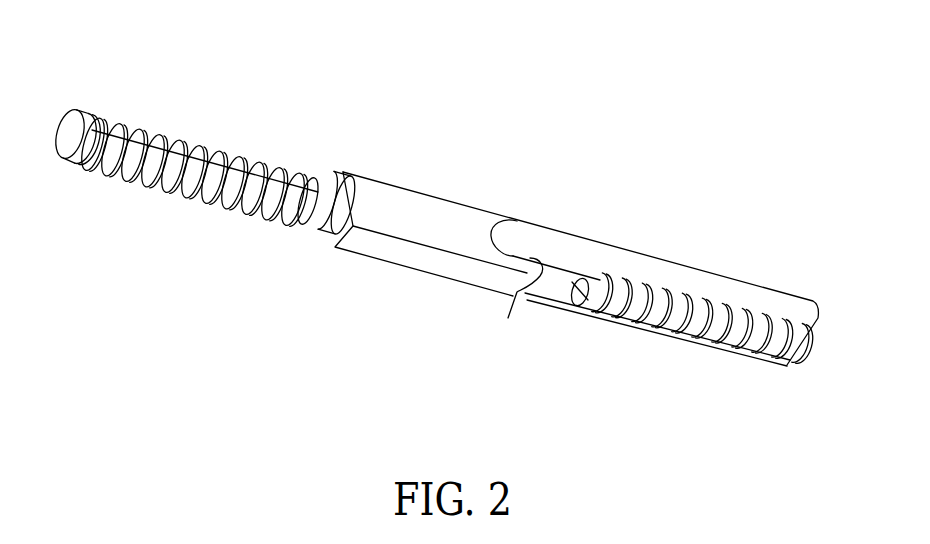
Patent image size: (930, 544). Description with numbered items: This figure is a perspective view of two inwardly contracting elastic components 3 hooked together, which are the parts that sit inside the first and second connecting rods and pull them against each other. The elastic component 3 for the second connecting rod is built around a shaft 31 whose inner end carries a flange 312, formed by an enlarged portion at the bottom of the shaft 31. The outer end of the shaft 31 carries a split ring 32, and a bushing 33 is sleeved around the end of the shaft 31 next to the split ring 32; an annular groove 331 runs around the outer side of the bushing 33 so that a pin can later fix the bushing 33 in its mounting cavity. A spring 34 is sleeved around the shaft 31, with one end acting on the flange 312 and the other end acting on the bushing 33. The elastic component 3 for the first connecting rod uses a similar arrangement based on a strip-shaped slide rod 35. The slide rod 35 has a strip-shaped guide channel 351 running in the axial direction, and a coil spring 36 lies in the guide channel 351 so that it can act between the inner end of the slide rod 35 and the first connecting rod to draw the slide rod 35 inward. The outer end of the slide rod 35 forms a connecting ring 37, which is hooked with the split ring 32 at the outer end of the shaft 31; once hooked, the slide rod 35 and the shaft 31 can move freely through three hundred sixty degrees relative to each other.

The elastic component 3 is at (404, 198).
The shaft 31 is at (248, 150).
The flange 312 is at (90, 120).
The split ring 32 is at (518, 222).
The bushing 33 is at (317, 167).
The annular groove 331 is at (307, 225).
The spring 34 is at (190, 125).
The slide rod 35 is at (623, 250).
The guide channel 351 is at (580, 300).
The coil spring 36 is at (707, 347).
The connecting ring 37 is at (535, 295).